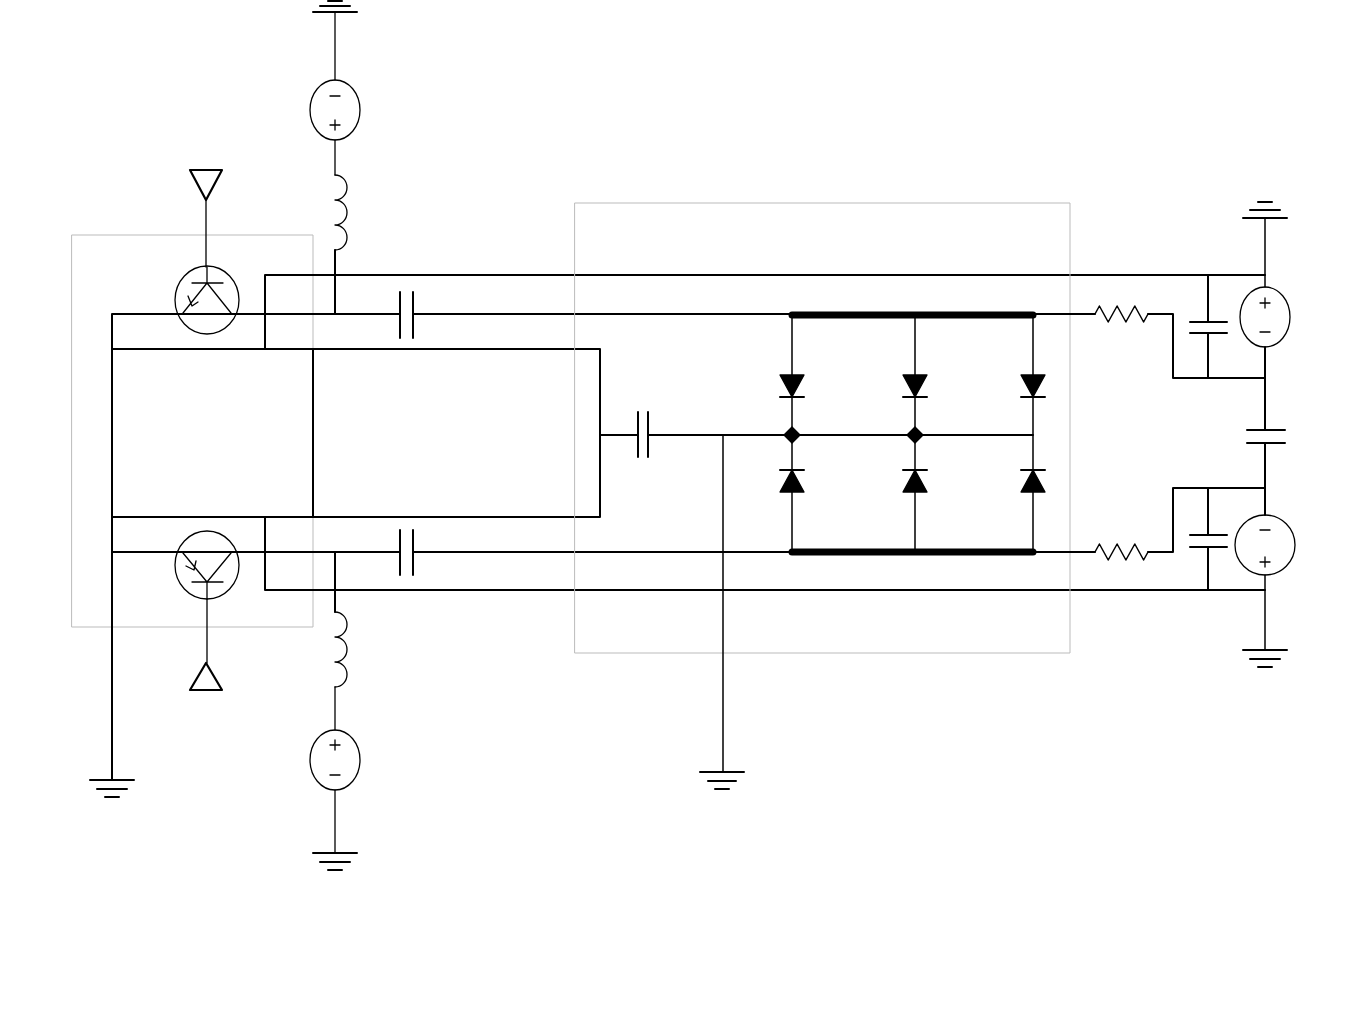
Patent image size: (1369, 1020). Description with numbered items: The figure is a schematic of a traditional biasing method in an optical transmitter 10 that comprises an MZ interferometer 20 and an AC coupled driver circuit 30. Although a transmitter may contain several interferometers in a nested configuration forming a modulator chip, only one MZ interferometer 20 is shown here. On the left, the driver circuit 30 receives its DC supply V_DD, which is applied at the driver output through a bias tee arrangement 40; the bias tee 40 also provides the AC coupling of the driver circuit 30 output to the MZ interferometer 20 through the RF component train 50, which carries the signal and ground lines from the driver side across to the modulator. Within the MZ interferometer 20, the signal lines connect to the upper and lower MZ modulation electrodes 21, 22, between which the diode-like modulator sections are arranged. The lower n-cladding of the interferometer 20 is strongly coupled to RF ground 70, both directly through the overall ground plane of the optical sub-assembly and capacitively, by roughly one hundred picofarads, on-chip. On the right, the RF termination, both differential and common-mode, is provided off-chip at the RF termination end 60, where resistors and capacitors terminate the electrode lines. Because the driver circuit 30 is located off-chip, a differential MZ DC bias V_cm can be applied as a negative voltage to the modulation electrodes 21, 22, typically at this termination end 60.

The optical transmitter 10 is at (1131, 749).
The MZ interferometer 20 is at (939, 192).
The MZ modulation electrode 21 is at (1018, 555).
The MZ modulation electrode 22 is at (1030, 313).
The driver circuit 30 is at (154, 206).
The bias tee arrangement 40 is at (449, 206).
The RF component train 50 is at (539, 544).
The RF termination end 60 is at (1231, 125).
The RF ground 70 is at (764, 777).